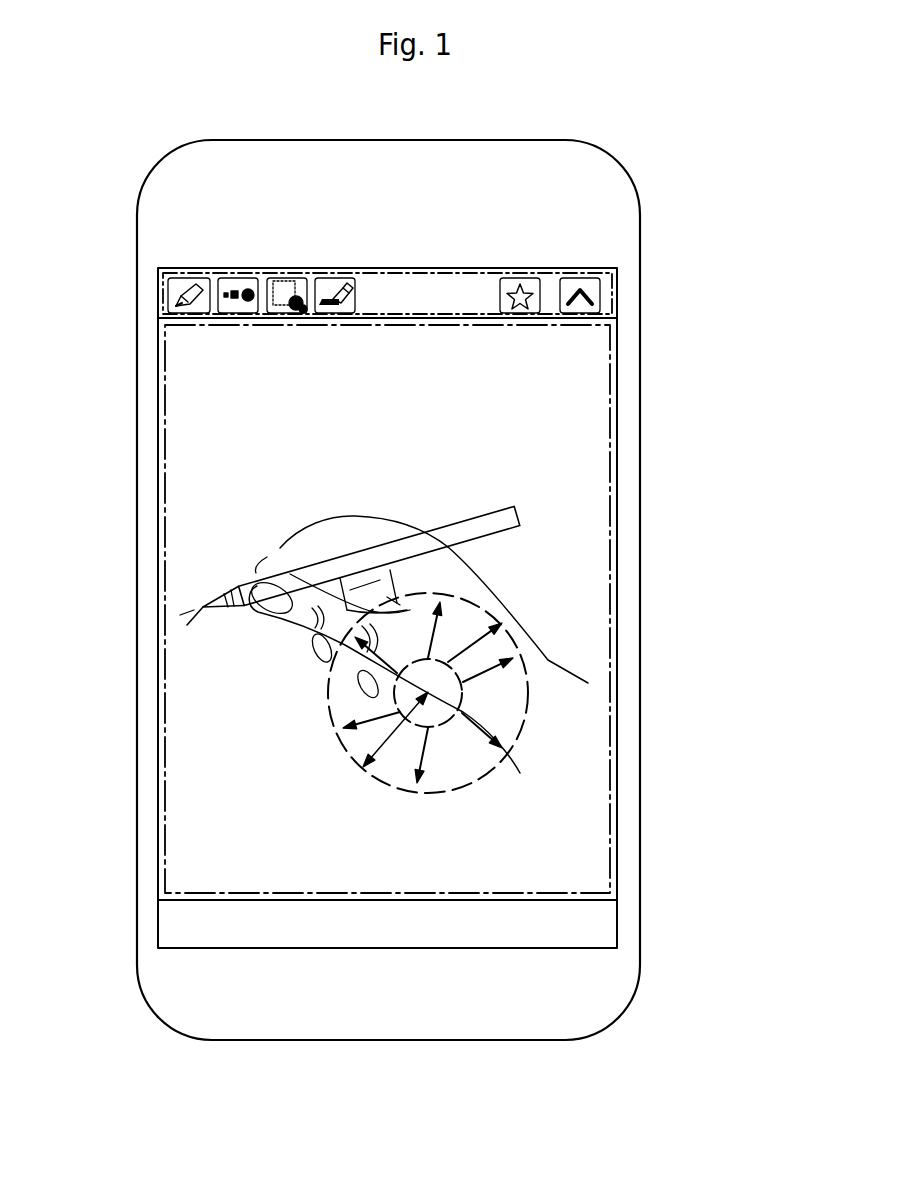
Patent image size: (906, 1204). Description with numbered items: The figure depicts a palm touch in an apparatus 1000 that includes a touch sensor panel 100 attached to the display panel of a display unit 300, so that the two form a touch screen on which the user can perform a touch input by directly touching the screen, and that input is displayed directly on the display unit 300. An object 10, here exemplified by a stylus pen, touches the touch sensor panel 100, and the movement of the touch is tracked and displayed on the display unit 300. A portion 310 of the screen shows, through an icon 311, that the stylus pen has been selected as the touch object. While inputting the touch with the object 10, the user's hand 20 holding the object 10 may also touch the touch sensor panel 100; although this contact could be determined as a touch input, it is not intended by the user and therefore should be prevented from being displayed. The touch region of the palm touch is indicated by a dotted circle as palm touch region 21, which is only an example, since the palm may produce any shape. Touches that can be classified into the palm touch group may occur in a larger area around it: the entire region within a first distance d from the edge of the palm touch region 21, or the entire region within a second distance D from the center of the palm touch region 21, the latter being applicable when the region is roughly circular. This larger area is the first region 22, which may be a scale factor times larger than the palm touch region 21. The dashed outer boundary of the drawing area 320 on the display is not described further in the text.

The apparatus 1000 is at (607, 200).
The display unit 300 is at (618, 369).
The touch sensor panel 100 is at (697, 347).
The drawing area 320 is at (613, 402).
The portion of the screen 310 is at (615, 292).
The icon 311 is at (168, 291).
The object 10 is at (497, 522).
The user's hand 20 is at (290, 554).
The palm touch region 21 is at (450, 690).
The first region 22 is at (518, 738).
The first distance d is at (487, 640).
The second distance D is at (390, 738).